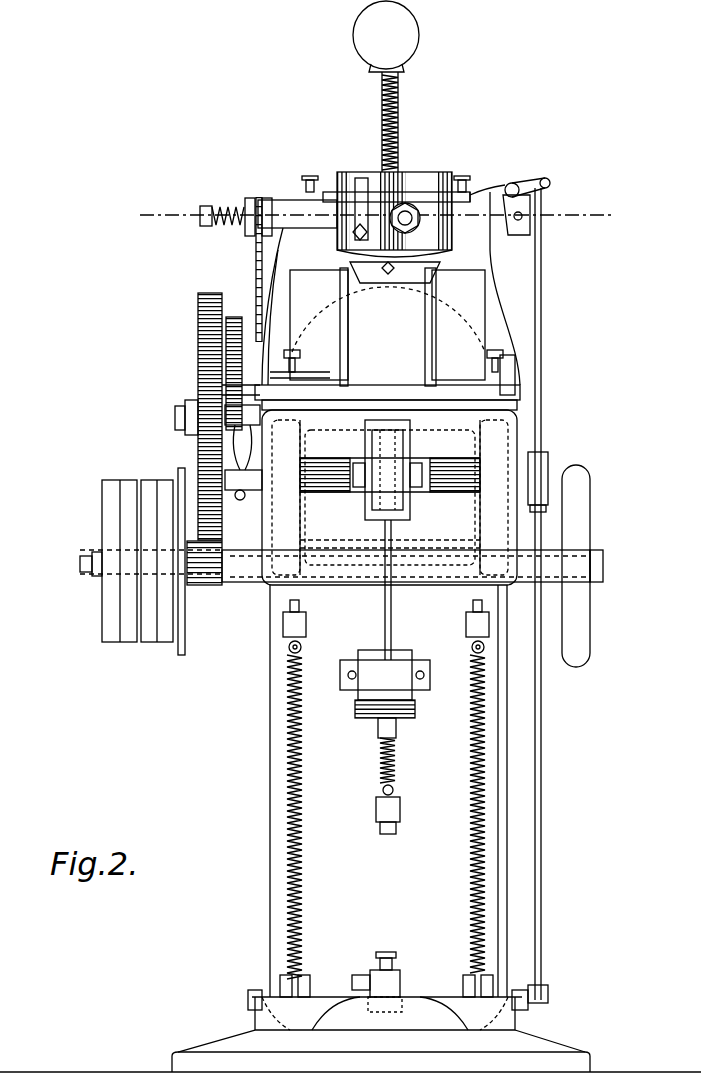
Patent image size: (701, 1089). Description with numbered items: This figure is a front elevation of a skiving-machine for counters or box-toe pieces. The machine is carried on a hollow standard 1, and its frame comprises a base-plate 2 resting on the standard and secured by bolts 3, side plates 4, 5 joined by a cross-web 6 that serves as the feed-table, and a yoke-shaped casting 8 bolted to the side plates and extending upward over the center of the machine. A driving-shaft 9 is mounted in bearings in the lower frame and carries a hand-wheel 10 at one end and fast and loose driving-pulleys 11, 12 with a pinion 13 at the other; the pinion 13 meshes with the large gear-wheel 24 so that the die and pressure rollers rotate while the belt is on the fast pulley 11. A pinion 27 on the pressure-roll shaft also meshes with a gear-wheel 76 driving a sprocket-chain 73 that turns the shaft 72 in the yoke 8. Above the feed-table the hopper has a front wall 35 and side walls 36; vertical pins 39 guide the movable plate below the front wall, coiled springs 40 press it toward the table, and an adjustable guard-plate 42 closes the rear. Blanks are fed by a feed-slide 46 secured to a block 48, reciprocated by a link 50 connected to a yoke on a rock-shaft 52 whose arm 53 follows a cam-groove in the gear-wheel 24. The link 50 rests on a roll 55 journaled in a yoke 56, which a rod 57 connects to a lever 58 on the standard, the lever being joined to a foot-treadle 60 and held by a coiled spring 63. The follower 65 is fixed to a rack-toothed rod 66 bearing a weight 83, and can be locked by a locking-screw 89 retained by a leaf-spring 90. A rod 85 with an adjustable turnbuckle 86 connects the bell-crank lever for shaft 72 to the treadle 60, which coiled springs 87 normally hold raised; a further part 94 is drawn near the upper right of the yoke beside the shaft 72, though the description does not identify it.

The standard 1 is at (270, 796).
The base-plate 2 is at (360, 585).
The bolts 3 is at (392, 572).
The side plate 4 is at (275, 520).
The side plate 5 is at (500, 537).
The cross-web 6 is at (373, 215).
The yoke-shaped casting 8 is at (497, 305).
The driving-shaft 9 is at (553, 563).
The hand-wheel 10 is at (578, 488).
The fast driving-pulley 11 is at (165, 638).
The loose driving-pulley 12 is at (114, 638).
The pinion 13 is at (215, 586).
The large gear-wheel 24 is at (200, 300).
The pinion 27 is at (200, 386).
The front wall 35 is at (300, 276).
The side walls 36 is at (341, 332).
The vertical pins 39 is at (292, 370).
The coiled springs 40 is at (200, 372).
The guard-plate 42 is at (504, 392).
The feed-slide 46 is at (410, 400).
The block 48 is at (366, 393).
The link 50 is at (370, 460).
The rock-shaft 52 is at (326, 480).
The arm 53 is at (198, 443).
The roll 55 is at (378, 488).
The yoke 56 is at (412, 460).
The rod 57 is at (388, 634).
The lever 58 is at (400, 670).
The foot-treadle 60 is at (315, 1000).
The coiled spring 63 is at (390, 767).
The follower 65 is at (393, 283).
The rod 66 is at (390, 123).
The shaft 72 is at (528, 214).
The sprocket-chain 73 is at (255, 258).
The gear-wheel 76 is at (233, 318).
The weight 83 is at (415, 40).
The rod 85 is at (541, 312).
The adjustable turnbuckle 86 is at (541, 472).
The coiled springs 87 is at (286, 855).
The locking-screw 89 is at (360, 178).
The leaf-spring 90 is at (356, 205).
The lever 94 is at (522, 183).